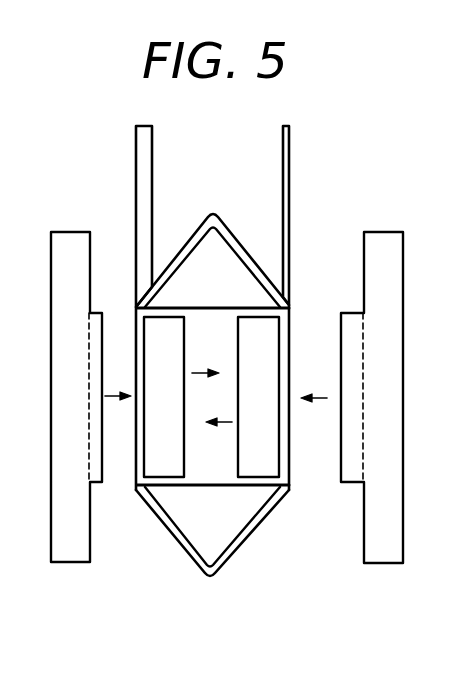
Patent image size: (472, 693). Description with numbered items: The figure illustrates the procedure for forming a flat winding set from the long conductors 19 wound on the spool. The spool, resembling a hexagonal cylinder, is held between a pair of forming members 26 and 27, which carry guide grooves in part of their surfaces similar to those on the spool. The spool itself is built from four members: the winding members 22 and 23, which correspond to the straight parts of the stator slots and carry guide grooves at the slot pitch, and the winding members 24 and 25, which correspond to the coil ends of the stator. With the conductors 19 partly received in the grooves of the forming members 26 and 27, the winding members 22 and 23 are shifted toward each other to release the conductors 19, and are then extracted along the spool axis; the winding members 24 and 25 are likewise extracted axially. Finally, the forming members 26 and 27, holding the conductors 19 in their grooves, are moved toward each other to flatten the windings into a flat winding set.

The long conductor 19 is at (289, 169).
The winding member 22 is at (163, 463).
The winding member 23 is at (263, 462).
The winding member 24 is at (205, 247).
The winding member 25 is at (205, 550).
The forming member 26 is at (65, 553).
The forming member 27 is at (387, 553).